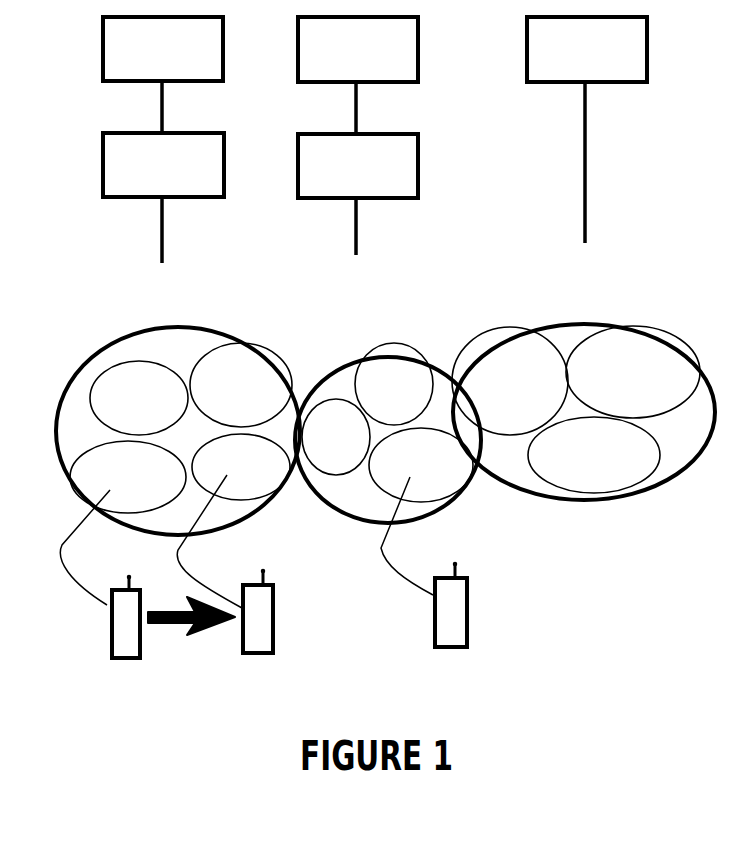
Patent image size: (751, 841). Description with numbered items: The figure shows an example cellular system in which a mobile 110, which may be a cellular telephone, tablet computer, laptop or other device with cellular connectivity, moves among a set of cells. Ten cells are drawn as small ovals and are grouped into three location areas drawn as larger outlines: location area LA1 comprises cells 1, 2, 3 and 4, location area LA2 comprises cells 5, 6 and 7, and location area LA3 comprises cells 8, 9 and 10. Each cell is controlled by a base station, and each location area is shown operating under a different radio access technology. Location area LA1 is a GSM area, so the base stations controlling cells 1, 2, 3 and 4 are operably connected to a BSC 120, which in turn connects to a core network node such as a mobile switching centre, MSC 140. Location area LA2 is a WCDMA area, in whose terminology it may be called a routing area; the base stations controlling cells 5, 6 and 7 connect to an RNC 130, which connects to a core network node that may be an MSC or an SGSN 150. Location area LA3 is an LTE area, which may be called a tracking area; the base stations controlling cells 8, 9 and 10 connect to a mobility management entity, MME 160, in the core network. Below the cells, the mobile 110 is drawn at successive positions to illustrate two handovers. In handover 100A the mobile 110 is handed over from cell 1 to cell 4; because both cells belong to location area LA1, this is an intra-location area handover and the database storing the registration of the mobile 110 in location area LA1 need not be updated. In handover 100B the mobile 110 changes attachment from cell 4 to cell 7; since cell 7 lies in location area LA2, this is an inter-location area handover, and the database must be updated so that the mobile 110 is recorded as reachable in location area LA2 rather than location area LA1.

The cell 1 is at (128, 477).
The cell 2 is at (139, 398).
The cell 3 is at (241, 385).
The cell 4 is at (241, 467).
The cell 5 is at (336, 437).
The cell 6 is at (394, 384).
The cell 7 is at (421, 465).
The cell 8 is at (510, 381).
The cell 9 is at (594, 455).
The cell 10 is at (633, 372).
The location area LA1 is at (171, 428).
The location area LA2 is at (388, 425).
The location area LA3 is at (584, 393).
The mobile 110 is at (101, 591).
The handover 100A is at (210, 572).
The handover 100B is at (392, 566).
The BSC 120 is at (163, 198).
The RNC 130 is at (358, 194).
The MSC 140 is at (163, 75).
The MSC or SGSN 150 is at (358, 75).
The MME 160 is at (587, 130).